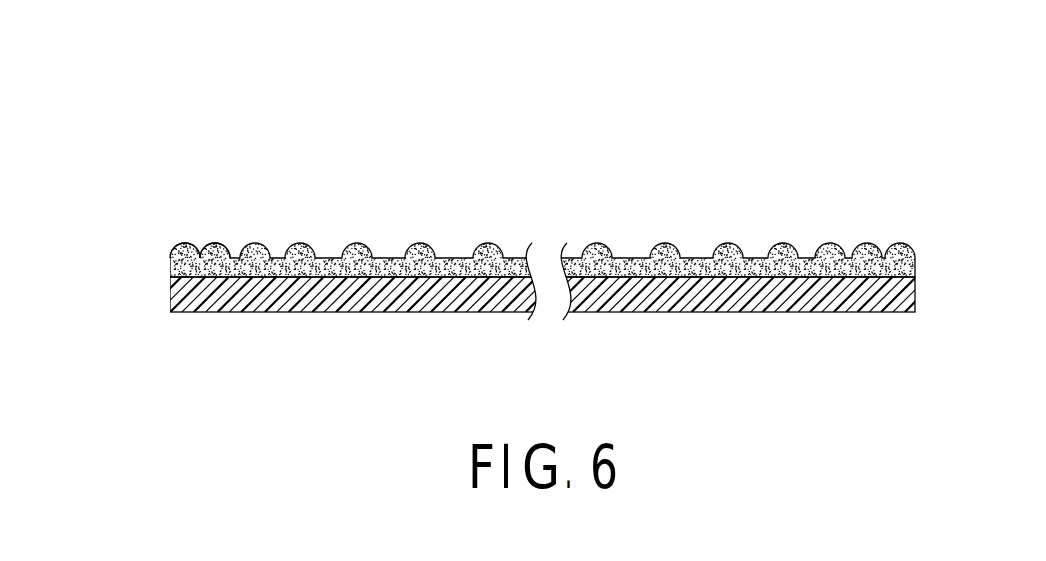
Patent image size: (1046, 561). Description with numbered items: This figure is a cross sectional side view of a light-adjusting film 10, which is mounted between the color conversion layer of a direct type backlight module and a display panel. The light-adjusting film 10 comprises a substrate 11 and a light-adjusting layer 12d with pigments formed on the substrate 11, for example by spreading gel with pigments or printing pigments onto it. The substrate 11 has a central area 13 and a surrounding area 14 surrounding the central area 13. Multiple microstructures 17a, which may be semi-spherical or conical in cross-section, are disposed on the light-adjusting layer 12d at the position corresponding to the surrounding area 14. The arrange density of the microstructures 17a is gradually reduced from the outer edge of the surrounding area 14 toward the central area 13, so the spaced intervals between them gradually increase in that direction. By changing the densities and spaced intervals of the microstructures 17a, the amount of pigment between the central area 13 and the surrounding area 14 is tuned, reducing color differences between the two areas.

The light-adjusting film 10 is at (185, 187).
The substrate 11 is at (177, 295).
The light-adjusting layer 12d is at (629, 252).
The central area 13 is at (520, 246).
The surrounding area 14 is at (210, 234).
The microstructure 17a is at (183, 247).